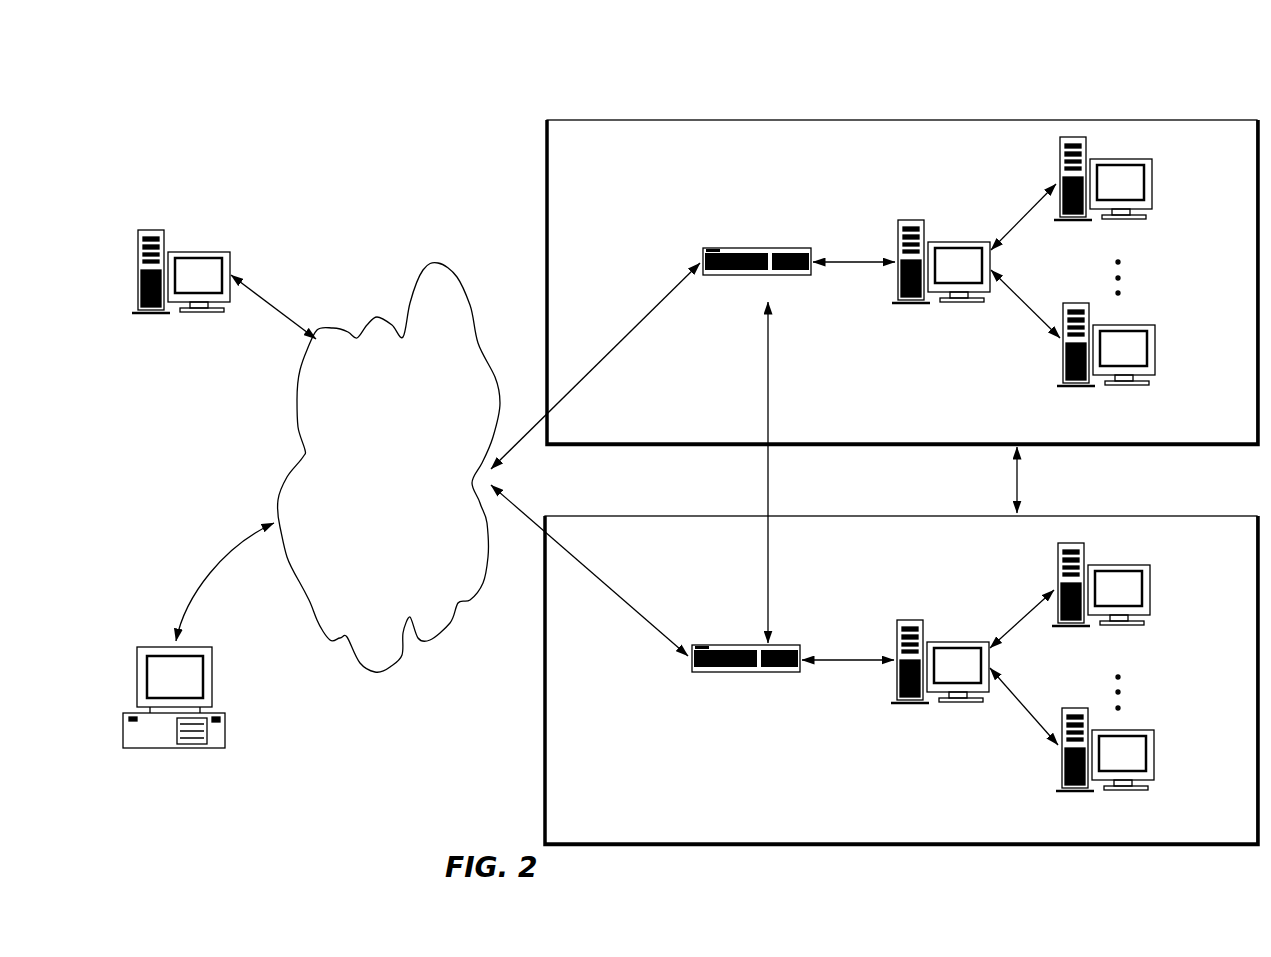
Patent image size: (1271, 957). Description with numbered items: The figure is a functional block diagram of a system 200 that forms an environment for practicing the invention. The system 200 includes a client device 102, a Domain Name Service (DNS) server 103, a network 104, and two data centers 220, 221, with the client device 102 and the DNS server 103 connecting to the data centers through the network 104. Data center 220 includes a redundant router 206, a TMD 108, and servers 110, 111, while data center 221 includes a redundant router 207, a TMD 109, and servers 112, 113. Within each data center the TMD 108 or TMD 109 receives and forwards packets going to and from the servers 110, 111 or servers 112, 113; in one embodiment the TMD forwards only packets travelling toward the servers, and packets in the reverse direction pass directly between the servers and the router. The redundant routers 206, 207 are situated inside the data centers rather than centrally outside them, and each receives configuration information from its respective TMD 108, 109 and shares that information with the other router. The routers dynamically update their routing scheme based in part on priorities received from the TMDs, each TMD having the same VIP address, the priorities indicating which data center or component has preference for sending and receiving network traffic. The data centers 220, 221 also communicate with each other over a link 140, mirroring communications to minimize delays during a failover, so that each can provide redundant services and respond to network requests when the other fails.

The system 200 is at (350, 103).
The client device 102 is at (213, 667).
The Domain Name Service (DNS) server 103 is at (214, 252).
The network 104 is at (381, 318).
The TMD 108 is at (957, 242).
The TMD 109 is at (947, 642).
The server 110 is at (1152, 163).
The server 111 is at (1155, 331).
The server 112 is at (1150, 570).
The server 113 is at (1154, 737).
The link 140 is at (1017, 480).
The redundant router 206 is at (745, 248).
The redundant router 207 is at (733, 645).
The data center 220 is at (902, 118).
The data center 221 is at (944, 515).